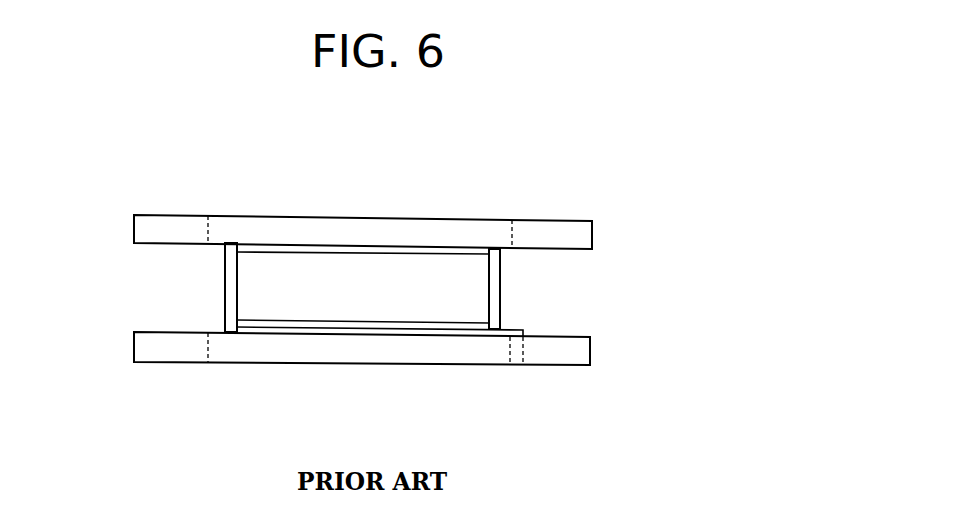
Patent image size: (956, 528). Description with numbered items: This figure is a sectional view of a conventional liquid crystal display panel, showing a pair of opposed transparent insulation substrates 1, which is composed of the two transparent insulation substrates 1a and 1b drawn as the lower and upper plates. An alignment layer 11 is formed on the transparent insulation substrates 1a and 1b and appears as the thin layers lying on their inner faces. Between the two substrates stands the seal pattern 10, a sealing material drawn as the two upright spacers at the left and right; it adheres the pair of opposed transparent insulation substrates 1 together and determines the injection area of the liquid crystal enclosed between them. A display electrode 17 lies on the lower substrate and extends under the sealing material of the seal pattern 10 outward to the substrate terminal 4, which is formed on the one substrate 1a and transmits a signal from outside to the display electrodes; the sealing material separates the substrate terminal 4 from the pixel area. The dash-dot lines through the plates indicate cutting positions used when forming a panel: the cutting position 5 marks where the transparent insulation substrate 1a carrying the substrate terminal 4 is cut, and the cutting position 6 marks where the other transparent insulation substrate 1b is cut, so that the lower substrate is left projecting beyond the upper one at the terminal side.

The pair of opposed transparent insulation substrates 1 is at (440, 290).
The transparent insulation substrate 1a is at (578, 353).
The transparent insulation substrate 1b is at (585, 236).
The substrate terminal 4 is at (518, 365).
The cutting position 5 is at (206, 362).
The cutting position 6 is at (208, 222).
The seal pattern 10 is at (225, 289).
The alignment layer 11 is at (337, 327).
The display electrode 17 is at (415, 331).